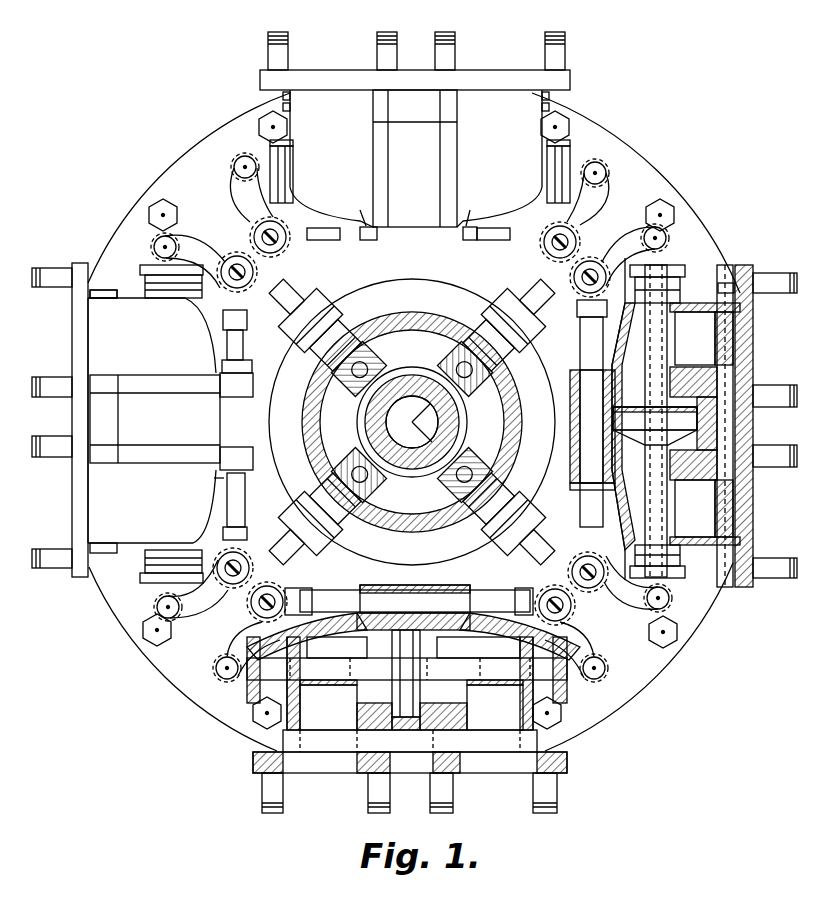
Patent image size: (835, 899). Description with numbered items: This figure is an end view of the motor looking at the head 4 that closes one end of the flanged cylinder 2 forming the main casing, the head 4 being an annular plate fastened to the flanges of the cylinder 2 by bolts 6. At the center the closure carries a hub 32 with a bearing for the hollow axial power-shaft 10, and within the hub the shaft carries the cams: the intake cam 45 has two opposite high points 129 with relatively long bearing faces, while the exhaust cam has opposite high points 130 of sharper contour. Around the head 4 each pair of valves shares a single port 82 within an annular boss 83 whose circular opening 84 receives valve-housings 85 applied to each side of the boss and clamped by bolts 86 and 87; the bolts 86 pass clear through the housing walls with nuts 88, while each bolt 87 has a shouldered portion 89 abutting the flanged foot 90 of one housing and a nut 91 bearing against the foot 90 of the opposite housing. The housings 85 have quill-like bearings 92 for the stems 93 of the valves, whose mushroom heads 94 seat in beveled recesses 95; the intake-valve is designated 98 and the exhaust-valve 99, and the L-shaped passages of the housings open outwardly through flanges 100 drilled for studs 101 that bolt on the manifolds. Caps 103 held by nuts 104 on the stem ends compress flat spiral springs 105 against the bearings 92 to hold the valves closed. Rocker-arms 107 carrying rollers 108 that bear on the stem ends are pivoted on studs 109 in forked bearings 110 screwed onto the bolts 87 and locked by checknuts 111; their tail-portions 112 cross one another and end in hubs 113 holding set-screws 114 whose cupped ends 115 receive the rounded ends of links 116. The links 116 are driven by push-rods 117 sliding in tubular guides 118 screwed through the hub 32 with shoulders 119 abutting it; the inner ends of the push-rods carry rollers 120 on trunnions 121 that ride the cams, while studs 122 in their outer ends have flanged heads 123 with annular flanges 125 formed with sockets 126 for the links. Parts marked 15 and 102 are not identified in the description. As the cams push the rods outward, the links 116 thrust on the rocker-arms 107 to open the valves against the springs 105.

The flanged cylinder 2 is at (413, 112).
The head 4 is at (175, 150).
The bolts 6 is at (160, 205).
The power-shaft 10 is at (412, 422).
The crank member 15 is at (531, 291).
The hub 32 is at (580, 452).
The cam 45 is at (390, 412).
The port 82 is at (562, 494).
The annular bosses 83 is at (582, 428).
The circular openings 84 is at (580, 406).
The valve-housings 85 is at (395, 421).
The bolts 86 is at (283, 96).
The bolts 87 is at (208, 502).
The nuts 88 is at (283, 107).
The shouldered portion 89 is at (278, 341).
The flanged foot 90 is at (348, 348).
The nut 91 is at (338, 285).
The quill-like bearings 92 is at (493, 497).
The valve stems 93 is at (457, 484).
The mushroom heads 94 is at (380, 690).
The beveled recesses 95 is at (423, 673).
The intake-valve 98 is at (416, 420).
The exhaust-valve 99 is at (399, 420).
The flanges 100 is at (312, 78).
The studs 101 is at (380, 54).
The link 102 is at (168, 604).
The caps 103 is at (405, 367).
The nuts 104 is at (399, 432).
The flat spiral springs 105 is at (330, 170).
The rocker-arms 107 is at (423, 423).
The rollers 108 is at (379, 416).
The studs 109 is at (421, 420).
The forked bearings 110 is at (410, 398).
The checknuts 111 is at (398, 419).
The tail-portions 112 is at (427, 422).
The hubs 113 is at (342, 393).
The set-screws 114 is at (578, 516).
The cupped ends 115 is at (527, 428).
The links 116 is at (426, 402).
The push-rods 117 is at (469, 493).
The guides 118 is at (387, 421).
The shoulders 119 is at (412, 420).
The rollers 120 is at (410, 414).
The pintles 121 is at (413, 433).
The studs 122 is at (501, 511).
The flanged heads 123 is at (419, 434).
The annular flanges 125 is at (421, 422).
The sockets 126 is at (541, 507).
The high points 129 is at (407, 424).
The high points 130 is at (413, 418).